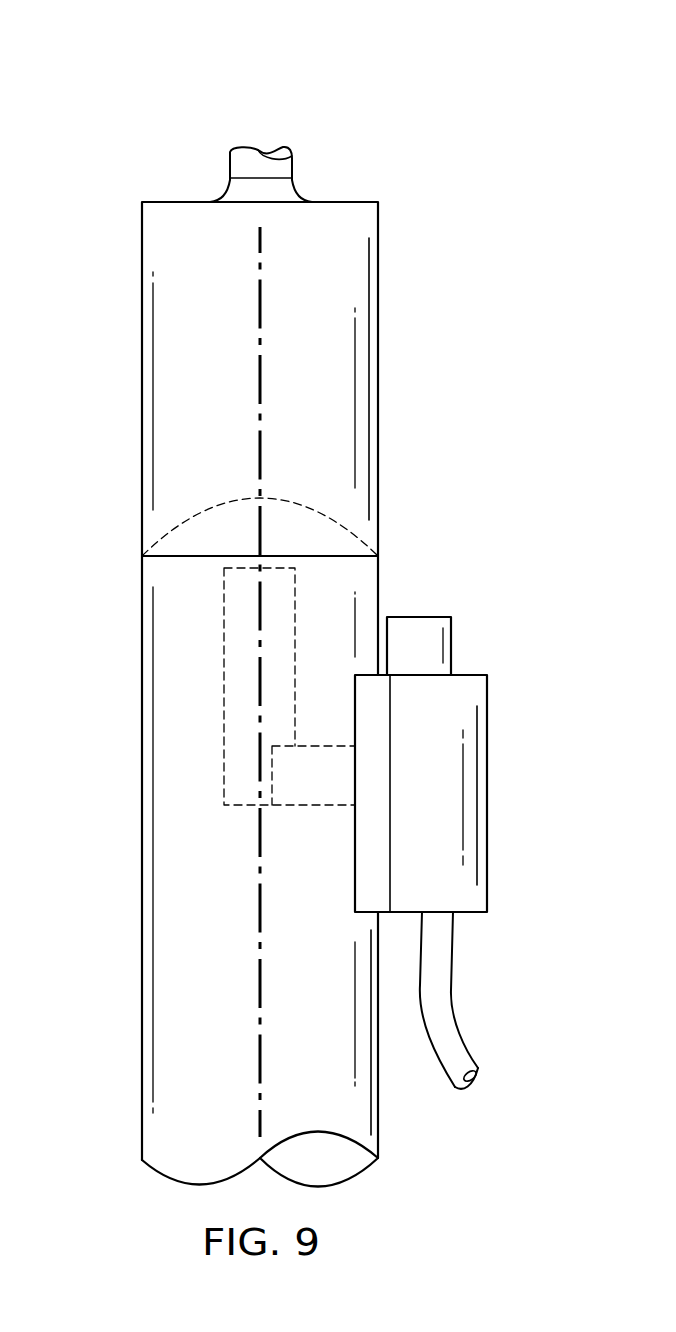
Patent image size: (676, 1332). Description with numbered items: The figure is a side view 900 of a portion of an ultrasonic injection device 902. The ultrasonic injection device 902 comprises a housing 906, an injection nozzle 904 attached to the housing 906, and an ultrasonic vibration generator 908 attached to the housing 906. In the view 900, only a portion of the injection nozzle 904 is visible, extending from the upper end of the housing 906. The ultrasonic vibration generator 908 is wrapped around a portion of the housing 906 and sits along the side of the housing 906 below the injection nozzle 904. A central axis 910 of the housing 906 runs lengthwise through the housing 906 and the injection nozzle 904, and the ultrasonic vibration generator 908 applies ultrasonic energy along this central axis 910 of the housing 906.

The view 900 is at (97, 68).
The ultrasonic injection device 902 is at (512, 203).
The injection nozzle 904 is at (131, 322).
The housing 906 is at (131, 790).
The ultrasonic vibration generator 908 is at (488, 790).
The central axis 910 is at (258, 456).